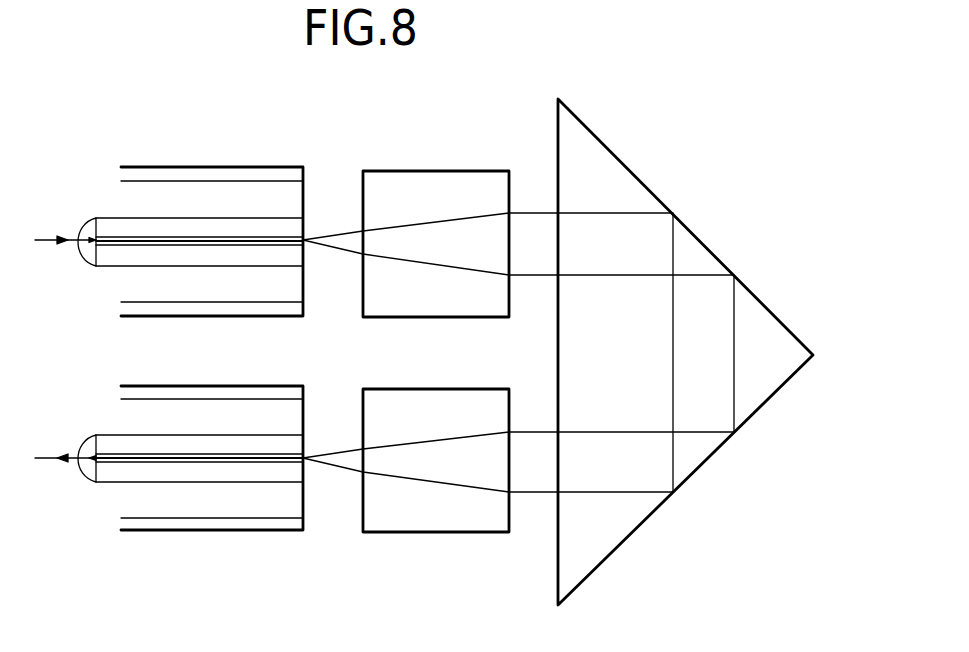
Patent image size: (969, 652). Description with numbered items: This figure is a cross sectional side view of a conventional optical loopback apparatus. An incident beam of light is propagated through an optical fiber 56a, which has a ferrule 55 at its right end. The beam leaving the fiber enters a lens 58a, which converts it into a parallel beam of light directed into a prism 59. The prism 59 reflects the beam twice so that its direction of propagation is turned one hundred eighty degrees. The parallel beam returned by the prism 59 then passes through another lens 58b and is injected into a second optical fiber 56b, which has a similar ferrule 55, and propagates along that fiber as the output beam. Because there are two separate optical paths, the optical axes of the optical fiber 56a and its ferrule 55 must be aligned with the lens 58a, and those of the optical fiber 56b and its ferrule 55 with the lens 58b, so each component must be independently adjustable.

The ferrule 55 is at (207, 167).
The optical fiber 56a is at (134, 216).
The optical fiber 56b is at (132, 483).
The lens 58a is at (410, 171).
The lens 58b is at (440, 532).
The prism 59 is at (637, 177).